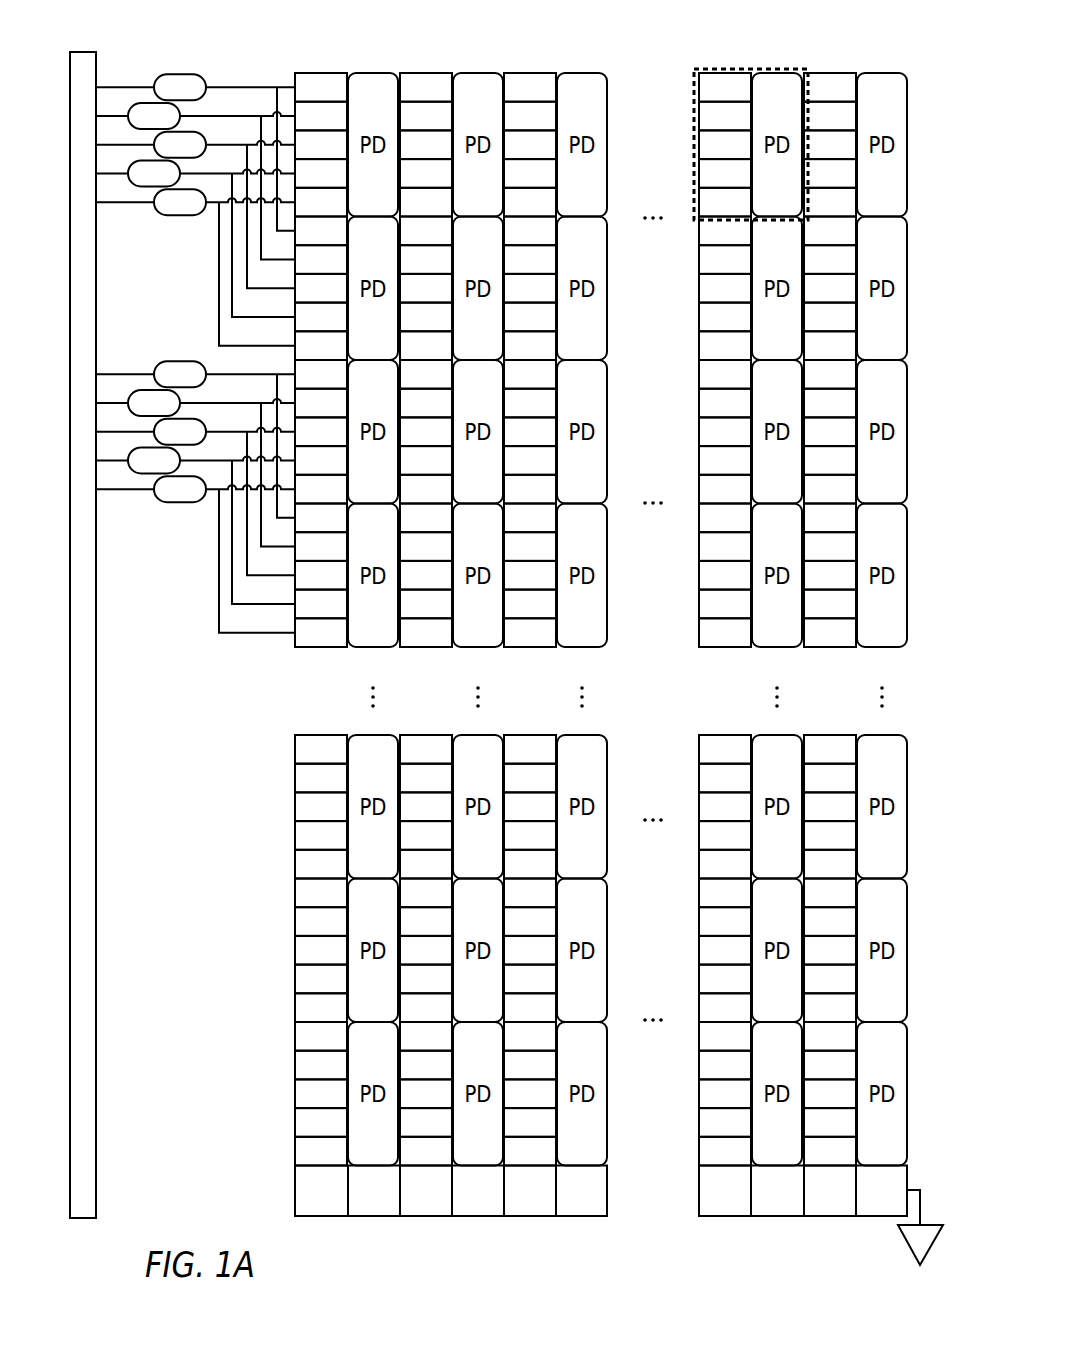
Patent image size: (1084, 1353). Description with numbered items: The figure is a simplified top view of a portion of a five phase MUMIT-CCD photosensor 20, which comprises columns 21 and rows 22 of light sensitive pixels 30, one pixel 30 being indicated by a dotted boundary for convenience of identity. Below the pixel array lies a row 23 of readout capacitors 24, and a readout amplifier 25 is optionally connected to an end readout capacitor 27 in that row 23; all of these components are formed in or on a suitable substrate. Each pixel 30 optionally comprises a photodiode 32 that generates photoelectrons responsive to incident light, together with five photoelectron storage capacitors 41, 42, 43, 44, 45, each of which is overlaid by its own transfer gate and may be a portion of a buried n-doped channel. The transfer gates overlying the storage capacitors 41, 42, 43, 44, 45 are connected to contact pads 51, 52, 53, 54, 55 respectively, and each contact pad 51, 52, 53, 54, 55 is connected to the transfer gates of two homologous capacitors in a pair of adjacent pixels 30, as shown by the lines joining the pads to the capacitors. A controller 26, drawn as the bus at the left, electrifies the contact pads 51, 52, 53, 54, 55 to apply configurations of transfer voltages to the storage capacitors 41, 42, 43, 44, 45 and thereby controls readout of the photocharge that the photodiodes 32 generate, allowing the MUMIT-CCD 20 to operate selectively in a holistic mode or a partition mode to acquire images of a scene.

The MUMIT-CCD photosensor 20 is at (248, 34).
The column 21 is at (348, 58).
The row 22 is at (282, 950).
The row of readout capacitors 23 is at (282, 1191).
The readout capacitor 24 is at (842, 1203).
The readout amplifier 25 is at (900, 1244).
The controller 26 is at (97, 623).
The end readout capacitor 27 is at (869, 1203).
The pixel 30 is at (726, 55).
The photodiode 32 is at (627, 619).
The storage capacitor 41 is at (575, 562).
The storage capacitor 42 is at (575, 591).
The storage capacitor 43 is at (575, 619).
The storage capacitor 44 is at (575, 648).
The storage capacitor 45 is at (575, 677).
The contact pad 51 is at (195, 295).
The contact pad 52 is at (195, 325).
The contact pad 53 is at (195, 354).
The contact pad 54 is at (195, 382).
The contact pad 55 is at (195, 411).